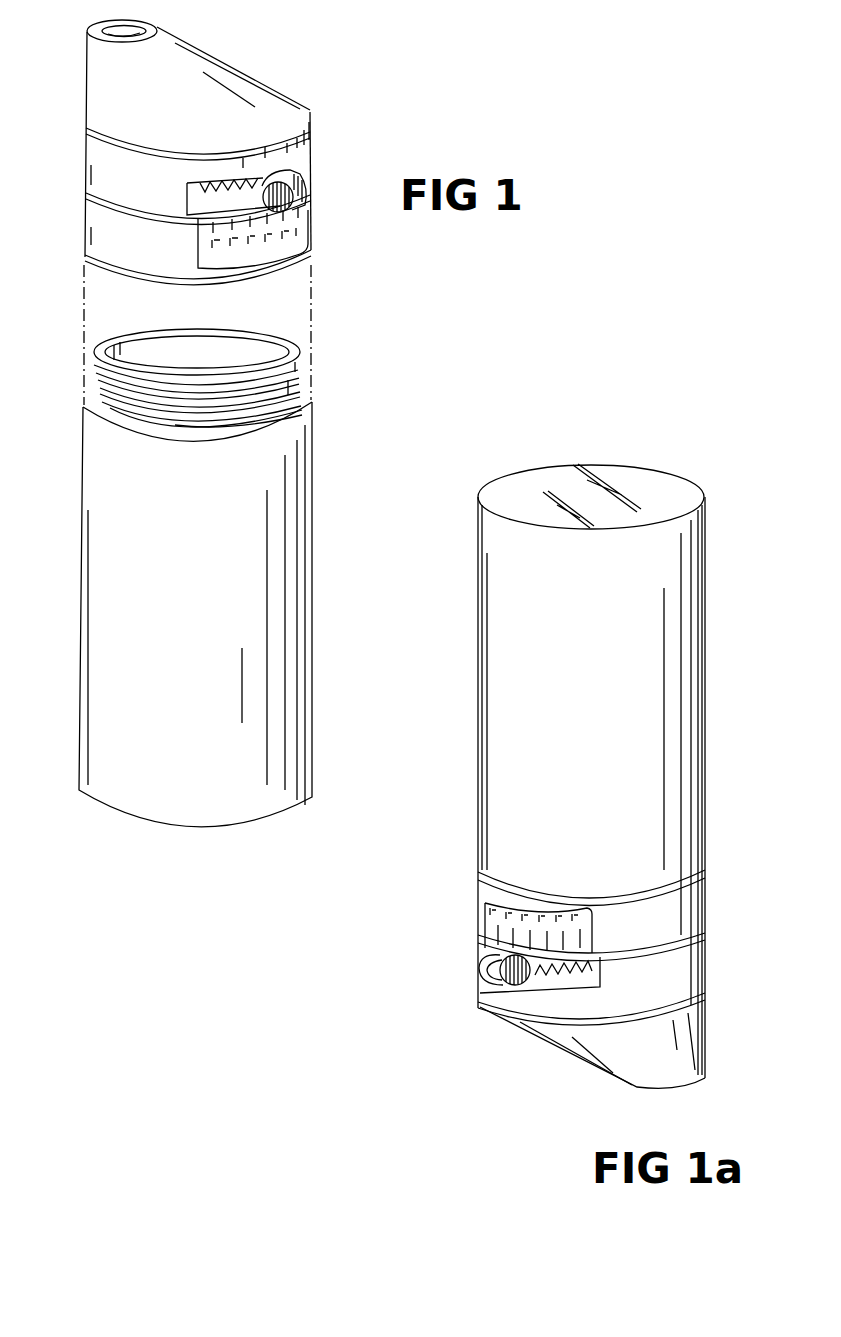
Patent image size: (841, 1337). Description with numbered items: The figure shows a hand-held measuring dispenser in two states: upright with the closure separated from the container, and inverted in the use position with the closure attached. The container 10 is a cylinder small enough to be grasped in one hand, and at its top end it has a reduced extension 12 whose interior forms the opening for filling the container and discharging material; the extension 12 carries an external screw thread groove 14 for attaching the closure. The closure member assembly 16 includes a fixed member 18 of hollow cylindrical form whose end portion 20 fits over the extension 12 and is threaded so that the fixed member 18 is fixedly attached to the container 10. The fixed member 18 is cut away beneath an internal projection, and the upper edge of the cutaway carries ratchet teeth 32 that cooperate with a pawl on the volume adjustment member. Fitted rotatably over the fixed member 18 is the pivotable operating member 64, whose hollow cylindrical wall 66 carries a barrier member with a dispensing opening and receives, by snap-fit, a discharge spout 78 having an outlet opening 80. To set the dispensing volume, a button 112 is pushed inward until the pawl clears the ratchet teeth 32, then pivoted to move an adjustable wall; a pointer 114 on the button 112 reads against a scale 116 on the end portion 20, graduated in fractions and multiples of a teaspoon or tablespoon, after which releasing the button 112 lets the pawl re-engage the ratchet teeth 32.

In FIG. 1, the container 10 is at (195, 614).
In FIG. 1A, the container 10 is at (591, 771).
In FIG. 1, the reduced extension 12 is at (265, 340).
In FIG. 1, the external screw thread groove 14 is at (97, 396).
In FIG. 1, the closure member assembly 16 is at (320, 143).
In FIG. 1A, the closure member assembly 16 is at (467, 938).
In FIG. 1, the fixed member 18 is at (86, 228).
In FIG. 1A, the fixed member 18 is at (707, 880).
In FIG. 1, the end portion 20 is at (121, 240).
In FIG. 1, the ratchet teeth 32 is at (228, 187).
In FIG. 1A, the ratchet teeth 32 is at (563, 968).
In FIG. 1, the pivotable closure member operating assembly 64 is at (86, 160).
In FIG. 1A, the pivotable closure member operating assembly 64 is at (707, 957).
In FIG. 1, the hollow cylindrical wall 66 is at (123, 178).
In FIG. 1, the discharge spout 78 is at (270, 105).
In FIG. 1A, the discharge spout 78 is at (692, 1035).
In FIG. 1, the outlet opening 80 is at (137, 25).
In FIG. 1, the button 112 is at (300, 178).
In FIG. 1A, the button 112 is at (512, 983).
In FIG. 1, the pointer 114 is at (300, 207).
In FIG. 1A, the pointer 114 is at (493, 973).
In FIG. 1, the scale 116 is at (300, 253).
In FIG. 1A, the scale 116 is at (555, 918).